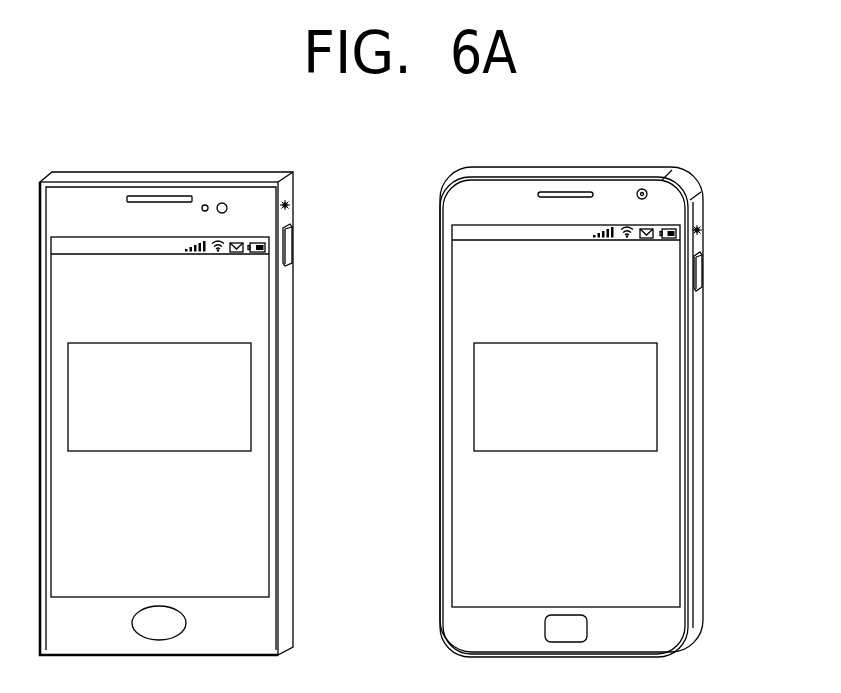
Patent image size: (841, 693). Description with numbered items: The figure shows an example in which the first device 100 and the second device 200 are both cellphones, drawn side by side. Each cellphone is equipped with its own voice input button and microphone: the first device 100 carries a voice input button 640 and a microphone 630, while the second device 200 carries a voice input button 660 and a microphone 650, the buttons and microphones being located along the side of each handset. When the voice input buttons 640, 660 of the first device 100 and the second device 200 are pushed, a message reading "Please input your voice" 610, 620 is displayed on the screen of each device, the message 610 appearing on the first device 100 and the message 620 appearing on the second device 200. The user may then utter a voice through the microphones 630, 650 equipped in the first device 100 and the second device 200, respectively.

The first device 100 is at (170, 172).
The second device 200 is at (573, 167).
The message 610 is at (251, 397).
The message 620 is at (657, 397).
The microphone 630 is at (291, 205).
The voice input button 640 is at (293, 245).
The microphone 650 is at (703, 230).
The voice input button 660 is at (703, 269).